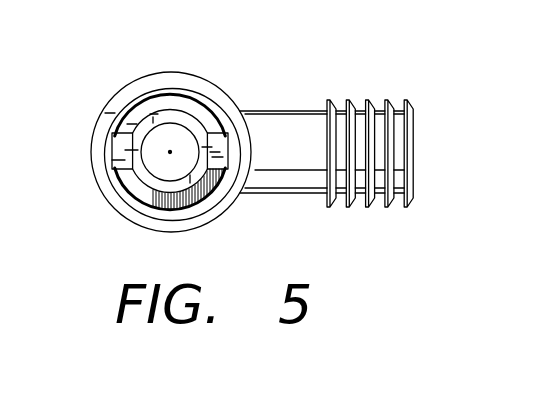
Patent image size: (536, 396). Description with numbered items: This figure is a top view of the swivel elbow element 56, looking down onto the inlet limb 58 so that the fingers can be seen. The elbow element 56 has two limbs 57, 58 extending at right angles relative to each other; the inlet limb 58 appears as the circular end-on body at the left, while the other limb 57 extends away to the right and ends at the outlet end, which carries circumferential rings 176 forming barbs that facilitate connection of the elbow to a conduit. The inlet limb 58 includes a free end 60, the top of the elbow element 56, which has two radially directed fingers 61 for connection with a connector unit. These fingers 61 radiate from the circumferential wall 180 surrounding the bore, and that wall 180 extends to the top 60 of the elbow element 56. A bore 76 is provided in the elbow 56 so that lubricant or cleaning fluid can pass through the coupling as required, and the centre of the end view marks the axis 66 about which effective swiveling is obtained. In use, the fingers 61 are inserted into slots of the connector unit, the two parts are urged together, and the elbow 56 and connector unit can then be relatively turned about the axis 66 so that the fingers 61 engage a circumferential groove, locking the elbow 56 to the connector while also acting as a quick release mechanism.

The elbow element 56 is at (92, 120).
The limb 57 is at (263, 194).
The inlet limb 58 is at (188, 231).
The free end 60 is at (173, 110).
The radially directed fingers 61 is at (117, 162).
The axis 66 is at (170, 152).
The bore 76 is at (168, 132).
The circumferential rings 176 is at (373, 162).
The circumferential wall 180 is at (152, 186).